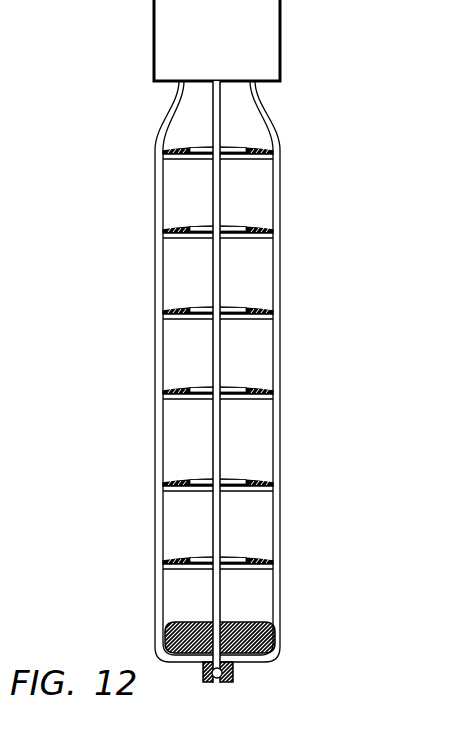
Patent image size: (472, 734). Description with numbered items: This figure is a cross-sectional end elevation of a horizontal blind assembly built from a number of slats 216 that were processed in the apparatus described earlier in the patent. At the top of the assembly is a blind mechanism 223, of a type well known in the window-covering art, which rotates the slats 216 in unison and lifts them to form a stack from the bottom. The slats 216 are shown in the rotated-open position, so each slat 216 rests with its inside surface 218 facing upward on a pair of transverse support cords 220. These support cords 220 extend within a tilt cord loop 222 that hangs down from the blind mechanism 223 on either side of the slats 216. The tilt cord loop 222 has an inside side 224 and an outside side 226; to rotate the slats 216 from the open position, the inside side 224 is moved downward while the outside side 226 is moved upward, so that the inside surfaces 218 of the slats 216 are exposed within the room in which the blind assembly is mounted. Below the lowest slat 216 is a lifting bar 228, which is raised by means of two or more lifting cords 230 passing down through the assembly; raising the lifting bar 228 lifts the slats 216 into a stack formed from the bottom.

The blind mechanism 223 is at (154, 60).
The slat 216 is at (176, 223).
The inside surface 218 is at (178, 305).
The transverse support cord 220 is at (240, 160).
The tilt cord loop 222 is at (155, 503).
The inside side 224 is at (156, 557).
The outside side 226 is at (282, 542).
The lifting bar 228 is at (172, 622).
The lifting cord 230 is at (223, 598).